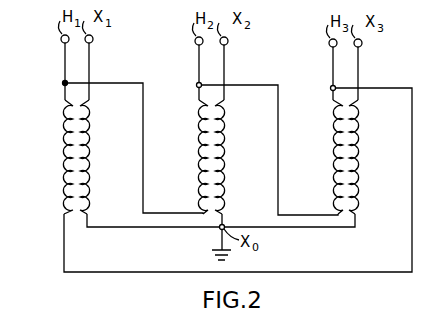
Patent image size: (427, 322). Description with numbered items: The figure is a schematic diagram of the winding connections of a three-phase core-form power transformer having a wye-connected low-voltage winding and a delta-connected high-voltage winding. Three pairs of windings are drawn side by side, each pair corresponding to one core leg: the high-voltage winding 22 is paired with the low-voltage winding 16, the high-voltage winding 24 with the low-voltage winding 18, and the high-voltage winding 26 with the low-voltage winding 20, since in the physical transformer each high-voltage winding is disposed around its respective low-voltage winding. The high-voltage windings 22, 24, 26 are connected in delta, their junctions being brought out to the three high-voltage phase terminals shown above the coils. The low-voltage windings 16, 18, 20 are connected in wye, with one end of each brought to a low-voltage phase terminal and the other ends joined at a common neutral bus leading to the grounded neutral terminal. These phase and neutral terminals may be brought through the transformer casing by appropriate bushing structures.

The low-voltage winding 16 is at (90, 174).
The low-voltage winding 18 is at (225, 175).
The low-voltage winding 20 is at (359, 177).
The high-voltage winding 22 is at (63, 170).
The high-voltage winding 24 is at (198, 173).
The high-voltage winding 26 is at (333, 175).